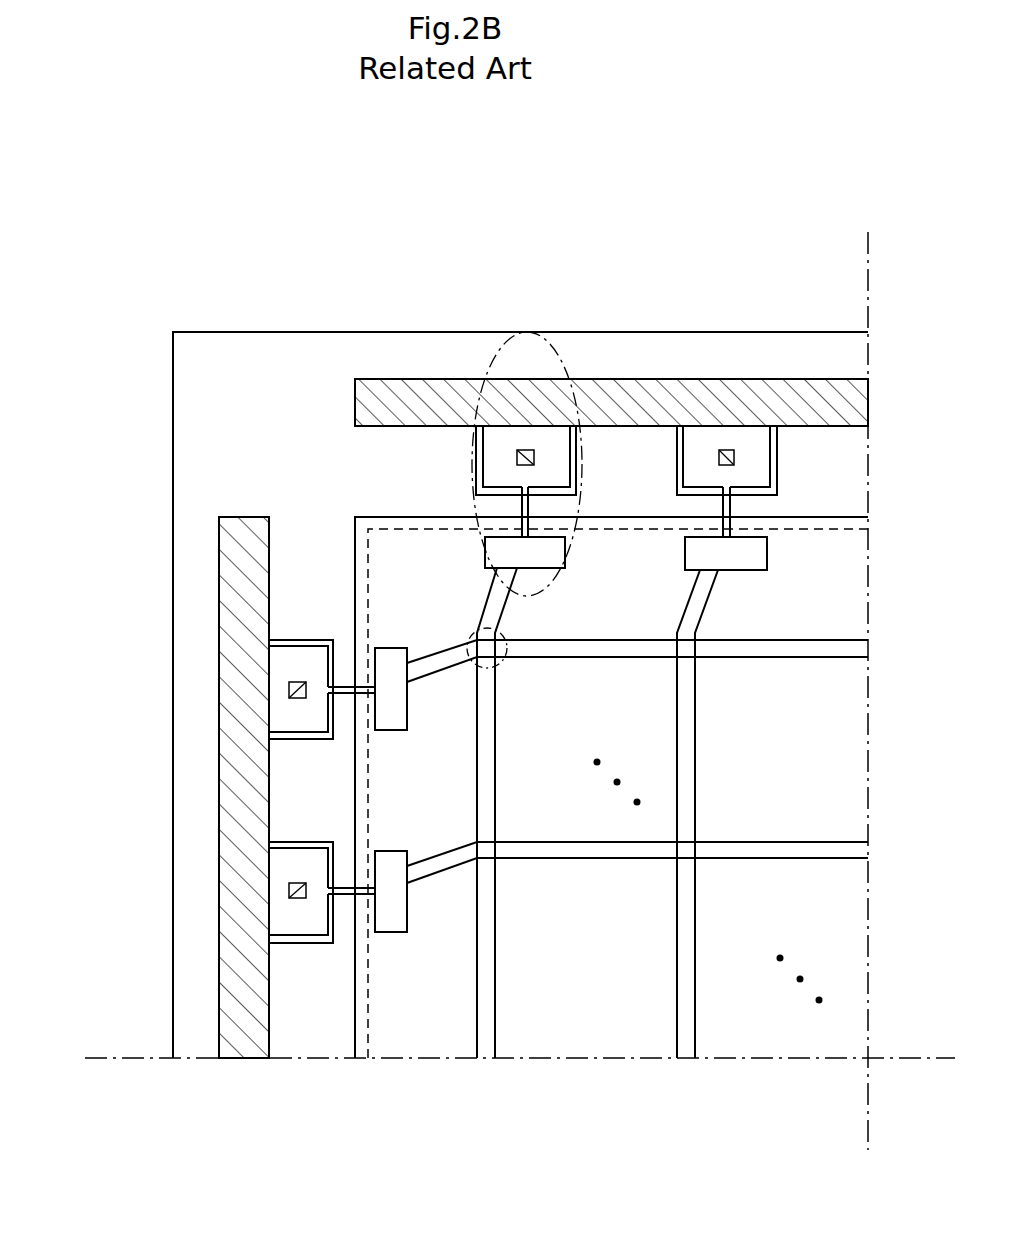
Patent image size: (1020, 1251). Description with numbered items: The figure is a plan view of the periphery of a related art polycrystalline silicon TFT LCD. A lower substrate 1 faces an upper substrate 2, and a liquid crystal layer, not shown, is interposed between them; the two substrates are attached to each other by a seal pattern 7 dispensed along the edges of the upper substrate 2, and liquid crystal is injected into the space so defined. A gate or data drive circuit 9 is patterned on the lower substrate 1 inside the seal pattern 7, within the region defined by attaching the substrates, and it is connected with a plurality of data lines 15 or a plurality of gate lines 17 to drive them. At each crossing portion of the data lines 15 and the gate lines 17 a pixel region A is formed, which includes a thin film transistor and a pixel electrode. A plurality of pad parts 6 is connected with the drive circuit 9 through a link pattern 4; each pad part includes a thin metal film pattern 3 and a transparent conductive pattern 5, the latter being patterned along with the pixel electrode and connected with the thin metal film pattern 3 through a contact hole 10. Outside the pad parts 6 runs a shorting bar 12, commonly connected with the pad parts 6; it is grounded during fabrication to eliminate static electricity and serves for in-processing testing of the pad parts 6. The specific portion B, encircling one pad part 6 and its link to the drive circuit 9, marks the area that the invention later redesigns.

The lower substrate 1 is at (173, 390).
The upper substrate 2 is at (832, 517).
The thin metal film pattern 3 is at (575, 488).
The link pattern 4 is at (521, 505).
The transparent conductive pattern 5 is at (577, 452).
The pad part 6 is at (576, 404).
The seal pattern 7 is at (366, 562).
The gate or data drive circuit 9 is at (565, 553).
The contact hole 10 is at (526, 450).
The shorting bar 12 is at (700, 395).
The data line 15 is at (485, 622).
The gate line 17 is at (443, 645).
The pixel region A is at (505, 665).
The specific portion B is at (477, 345).